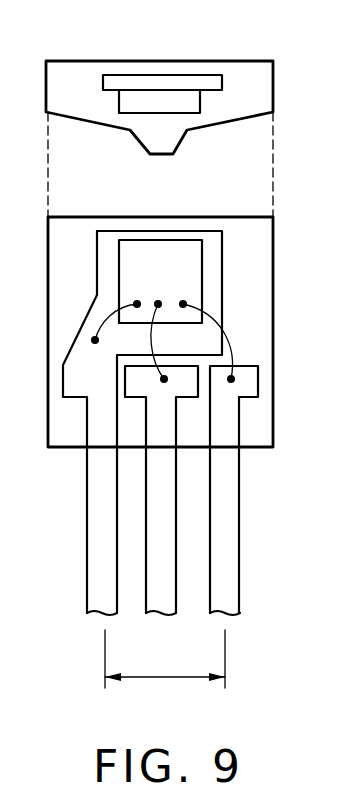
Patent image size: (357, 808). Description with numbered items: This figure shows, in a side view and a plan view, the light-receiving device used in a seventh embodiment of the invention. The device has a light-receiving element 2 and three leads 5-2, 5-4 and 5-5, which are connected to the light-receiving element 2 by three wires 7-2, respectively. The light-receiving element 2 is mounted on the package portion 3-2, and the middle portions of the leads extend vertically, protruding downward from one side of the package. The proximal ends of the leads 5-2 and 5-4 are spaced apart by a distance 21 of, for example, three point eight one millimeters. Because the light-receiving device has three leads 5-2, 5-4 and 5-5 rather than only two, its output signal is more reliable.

The resin package body 3-2 is at (143, 61).
The lead 5-2 is at (213, 75).
The light-receiving element 2 is at (130, 105).
The wires 7-2 is at (150, 346).
The lead 5-4 is at (163, 599).
The lead 5-5 is at (239, 547).
The distance 21 is at (165, 668).